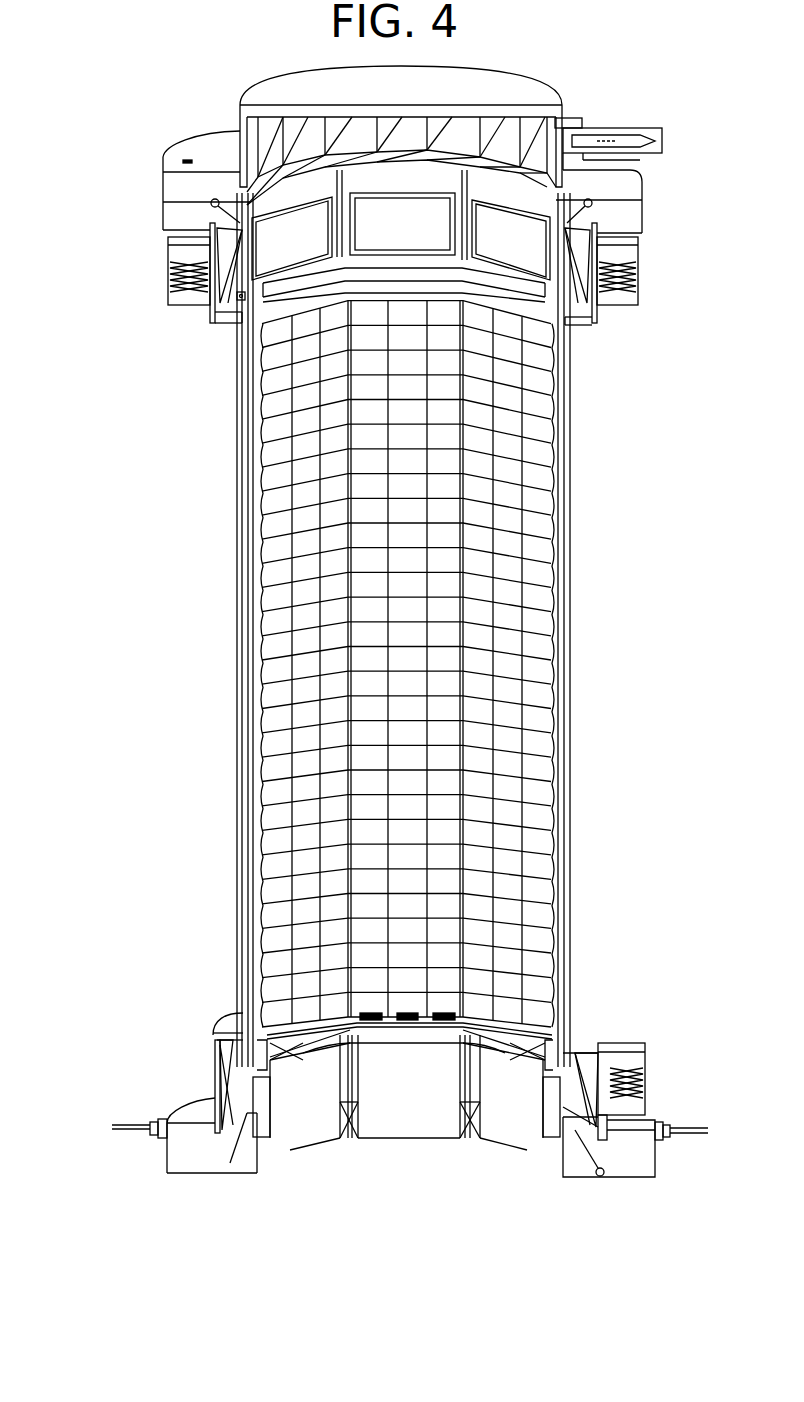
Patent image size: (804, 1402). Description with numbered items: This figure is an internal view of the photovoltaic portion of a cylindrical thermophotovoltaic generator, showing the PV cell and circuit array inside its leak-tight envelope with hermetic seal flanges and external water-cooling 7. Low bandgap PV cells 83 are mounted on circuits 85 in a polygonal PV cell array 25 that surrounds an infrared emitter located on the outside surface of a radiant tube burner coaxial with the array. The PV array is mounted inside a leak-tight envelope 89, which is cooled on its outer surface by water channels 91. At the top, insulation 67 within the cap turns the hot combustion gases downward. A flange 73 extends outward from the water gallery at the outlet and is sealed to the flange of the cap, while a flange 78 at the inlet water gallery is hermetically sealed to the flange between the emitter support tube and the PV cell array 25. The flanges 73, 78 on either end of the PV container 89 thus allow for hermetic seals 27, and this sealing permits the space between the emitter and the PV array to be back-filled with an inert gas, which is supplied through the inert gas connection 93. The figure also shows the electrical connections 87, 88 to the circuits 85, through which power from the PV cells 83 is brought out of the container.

The external water-cooling 7 is at (568, 627).
The PV cell array 25 is at (570, 440).
The hermetic seal 27 is at (593, 204).
The insulation 67 is at (553, 138).
The flange 73 is at (175, 185).
The flange 78 is at (642, 1157).
The PV cell 83 is at (528, 422).
The circuit 85 is at (552, 384).
The electrical connection 87 is at (683, 1127).
The electrical connection 88 is at (127, 1123).
The leak-tight envelope 89 is at (560, 487).
The water channel 91 is at (240, 318).
The inert gas connection 93 is at (638, 130).